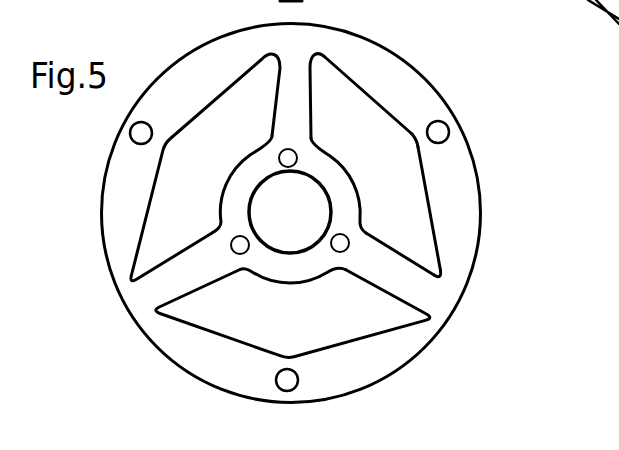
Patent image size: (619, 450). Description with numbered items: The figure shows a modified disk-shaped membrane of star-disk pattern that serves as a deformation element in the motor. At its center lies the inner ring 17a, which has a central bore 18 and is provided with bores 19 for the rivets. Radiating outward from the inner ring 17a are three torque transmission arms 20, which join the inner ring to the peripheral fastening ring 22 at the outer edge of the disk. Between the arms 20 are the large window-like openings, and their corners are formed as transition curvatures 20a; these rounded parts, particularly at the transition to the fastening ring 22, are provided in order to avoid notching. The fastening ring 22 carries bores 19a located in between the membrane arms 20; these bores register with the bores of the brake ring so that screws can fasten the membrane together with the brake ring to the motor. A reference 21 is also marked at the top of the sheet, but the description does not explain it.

The inner ring 17a is at (263, 163).
The central bore 18 is at (311, 249).
The bores 19 is at (349, 241).
The bores 19a is at (449, 129).
The torque transmission arms 20 is at (297, 93).
The transition curvatures 20a is at (313, 145).
The adjacent part (cut off) 21 is at (333, 0).
The peripheral fastening ring 22 is at (410, 63).